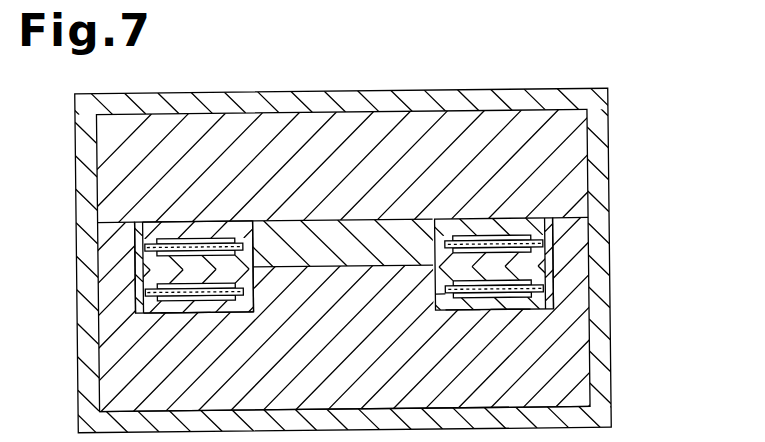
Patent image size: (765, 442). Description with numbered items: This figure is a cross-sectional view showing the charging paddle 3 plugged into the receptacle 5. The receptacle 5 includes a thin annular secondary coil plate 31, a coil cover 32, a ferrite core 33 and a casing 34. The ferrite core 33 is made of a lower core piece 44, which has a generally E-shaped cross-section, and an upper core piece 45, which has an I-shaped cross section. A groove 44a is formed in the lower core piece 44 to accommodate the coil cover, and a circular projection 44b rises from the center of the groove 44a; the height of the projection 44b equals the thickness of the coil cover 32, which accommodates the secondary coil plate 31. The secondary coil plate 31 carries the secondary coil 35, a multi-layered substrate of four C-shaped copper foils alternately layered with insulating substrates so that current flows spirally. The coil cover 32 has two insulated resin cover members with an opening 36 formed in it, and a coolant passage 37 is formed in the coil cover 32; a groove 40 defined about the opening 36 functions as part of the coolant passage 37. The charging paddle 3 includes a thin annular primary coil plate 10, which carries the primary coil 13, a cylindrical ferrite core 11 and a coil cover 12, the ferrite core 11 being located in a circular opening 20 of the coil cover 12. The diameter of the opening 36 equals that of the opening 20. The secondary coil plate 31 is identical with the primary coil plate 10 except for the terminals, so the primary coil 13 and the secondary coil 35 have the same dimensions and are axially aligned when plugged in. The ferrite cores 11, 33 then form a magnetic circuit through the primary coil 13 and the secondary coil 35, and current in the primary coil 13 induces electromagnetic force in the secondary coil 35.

The receptacle 5 is at (635, 106).
The upper core piece 45 is at (597, 141).
The ferrite core 33 is at (578, 190).
The casing 34 is at (600, 326).
The lower core piece 44 is at (600, 270).
The groove 44a is at (138, 308).
The circular projection 44b is at (258, 315).
The charging paddle 3 is at (138, 219).
The primary coil 13 is at (180, 221).
The primary coil plate 10 is at (212, 221).
The circular opening 20 is at (265, 221).
The ferrite core 11 is at (330, 221).
The coil cover 12 is at (540, 217).
The secondary coil plate 31 is at (224, 308).
The secondary coil 35 is at (183, 312).
The opening 36 is at (438, 297).
The groove 40 is at (463, 313).
The coolant passage 37 is at (510, 313).
The coil cover 32 is at (547, 315).